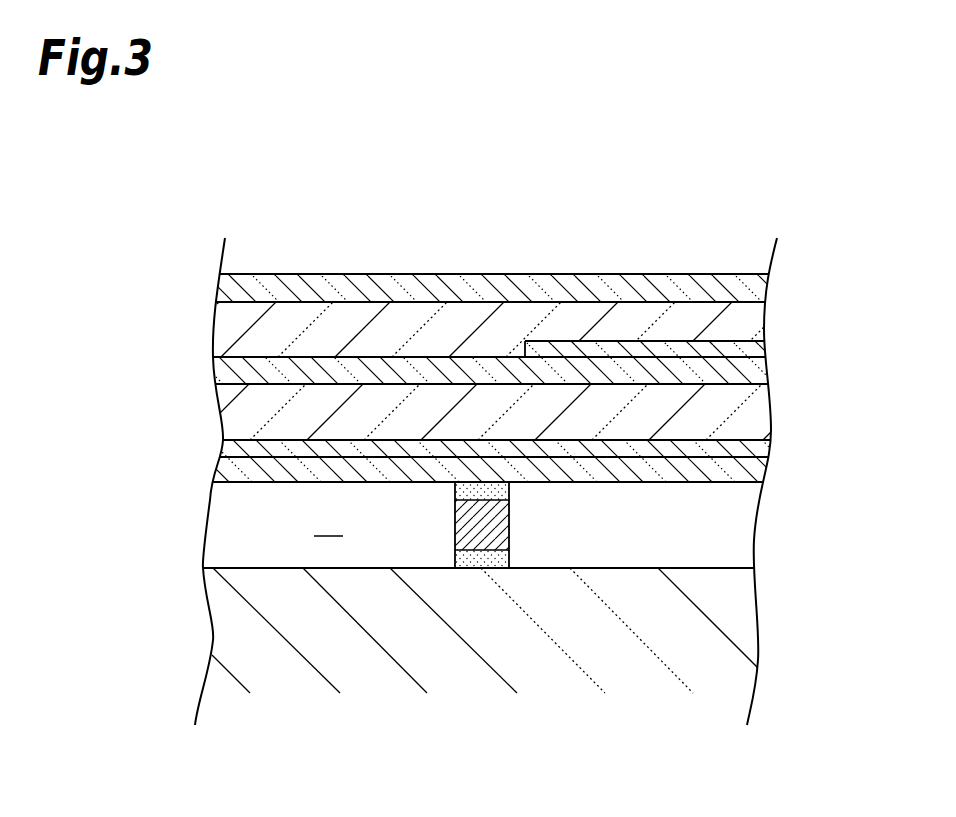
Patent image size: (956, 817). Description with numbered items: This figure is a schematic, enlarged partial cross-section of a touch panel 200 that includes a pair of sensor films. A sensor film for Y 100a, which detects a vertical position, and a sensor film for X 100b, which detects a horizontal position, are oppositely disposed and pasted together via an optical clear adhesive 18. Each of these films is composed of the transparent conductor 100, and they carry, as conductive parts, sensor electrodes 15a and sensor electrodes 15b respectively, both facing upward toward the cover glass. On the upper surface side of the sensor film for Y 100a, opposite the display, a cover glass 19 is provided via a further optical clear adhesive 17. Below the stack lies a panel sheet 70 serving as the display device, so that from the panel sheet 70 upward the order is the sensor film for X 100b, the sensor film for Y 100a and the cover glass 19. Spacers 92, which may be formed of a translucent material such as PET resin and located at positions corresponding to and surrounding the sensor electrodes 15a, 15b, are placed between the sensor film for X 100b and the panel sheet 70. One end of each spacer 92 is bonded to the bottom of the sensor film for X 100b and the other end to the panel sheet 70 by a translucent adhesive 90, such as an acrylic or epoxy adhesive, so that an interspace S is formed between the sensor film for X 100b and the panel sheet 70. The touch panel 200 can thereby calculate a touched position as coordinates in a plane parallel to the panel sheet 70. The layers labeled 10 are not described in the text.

The touch panel 200 is at (706, 217).
The transparent conductor 100 is at (455, 409).
The sensor film for Y 100a is at (270, 352).
The sensor film for X 100b is at (270, 488).
The cover glass 19 is at (751, 287).
The optical clear adhesive 17 is at (751, 322).
The sensor electrodes 15a is at (751, 348).
The substrate 10 is at (751, 370).
The optical clear adhesive 18 is at (750, 413).
The sensor electrodes 15b is at (750, 447).
The adhesive 90 is at (455, 492).
The spacer 92 is at (492, 537).
The panel sheet 70 is at (629, 568).